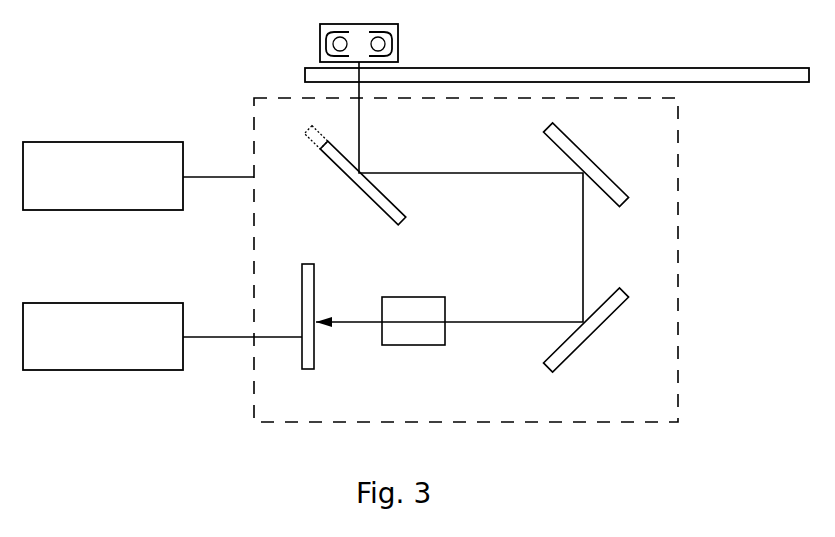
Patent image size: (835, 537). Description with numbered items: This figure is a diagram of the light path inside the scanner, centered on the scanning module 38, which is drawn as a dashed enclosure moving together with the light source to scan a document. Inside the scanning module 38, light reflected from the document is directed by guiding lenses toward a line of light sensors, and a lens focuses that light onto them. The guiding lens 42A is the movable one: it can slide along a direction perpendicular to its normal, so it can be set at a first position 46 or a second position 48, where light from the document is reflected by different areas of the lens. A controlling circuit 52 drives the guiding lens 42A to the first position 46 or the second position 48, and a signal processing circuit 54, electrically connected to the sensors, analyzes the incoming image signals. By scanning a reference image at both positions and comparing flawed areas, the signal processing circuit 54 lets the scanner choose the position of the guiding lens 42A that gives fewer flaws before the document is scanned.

The scanning module 38 is at (677, 200).
The guiding lens 42A is at (352, 181).
The first position 46 is at (380, 208).
The second position 48 is at (312, 136).
The controlling circuit 52 is at (145, 141).
The signal processing circuit 54 is at (137, 302).